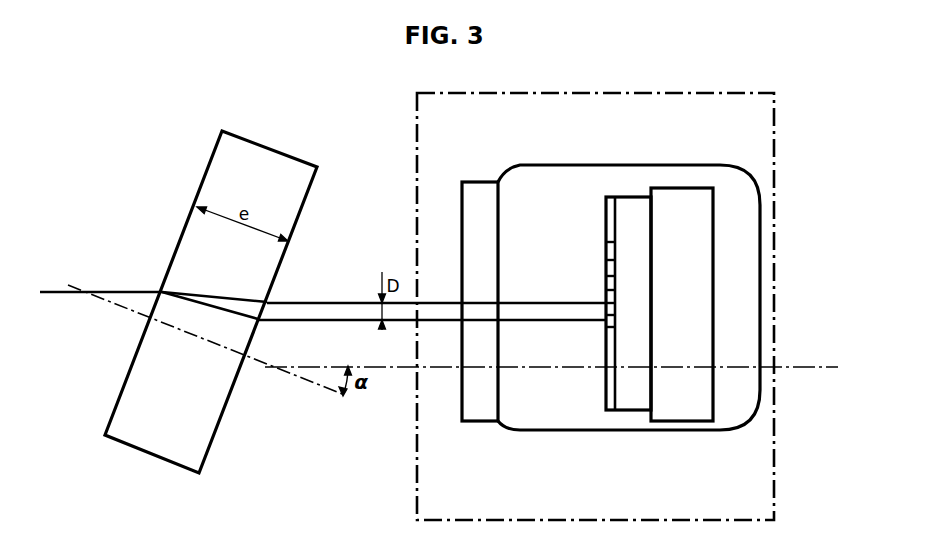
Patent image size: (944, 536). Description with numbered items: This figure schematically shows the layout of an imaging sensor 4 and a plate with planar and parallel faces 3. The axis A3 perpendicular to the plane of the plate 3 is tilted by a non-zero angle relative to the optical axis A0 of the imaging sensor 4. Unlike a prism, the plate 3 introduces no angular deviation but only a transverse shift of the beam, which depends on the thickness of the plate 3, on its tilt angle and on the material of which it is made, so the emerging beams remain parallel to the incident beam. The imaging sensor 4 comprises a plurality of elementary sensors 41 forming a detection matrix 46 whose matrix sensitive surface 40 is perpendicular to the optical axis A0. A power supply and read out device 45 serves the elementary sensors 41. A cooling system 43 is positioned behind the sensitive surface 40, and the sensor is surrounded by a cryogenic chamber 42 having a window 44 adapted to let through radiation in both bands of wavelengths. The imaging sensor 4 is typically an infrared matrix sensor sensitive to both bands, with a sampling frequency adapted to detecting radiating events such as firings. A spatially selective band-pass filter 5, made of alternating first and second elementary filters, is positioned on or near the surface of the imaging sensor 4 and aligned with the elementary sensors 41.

The plate with planar and parallel faces 3 is at (268, 148).
The imaging sensor 4 is at (597, 93).
The spatially selective band-pass filter 5 is at (606, 385).
The matrix sensitive surface 40 is at (578, 303).
The elementary sensors 41 is at (609, 253).
The cryogenic chamber 42 is at (587, 178).
The cooling system 43 is at (702, 262).
The window 44 is at (470, 230).
The power supply and read out device 45 is at (632, 208).
The detection matrix 46 is at (610, 223).
The optical axis A0 is at (824, 369).
The axis perpendicular to the plane of the plate A3 is at (112, 305).